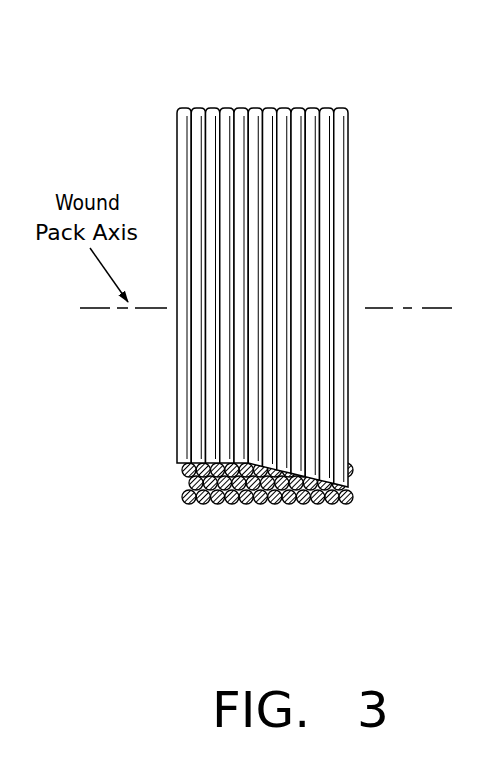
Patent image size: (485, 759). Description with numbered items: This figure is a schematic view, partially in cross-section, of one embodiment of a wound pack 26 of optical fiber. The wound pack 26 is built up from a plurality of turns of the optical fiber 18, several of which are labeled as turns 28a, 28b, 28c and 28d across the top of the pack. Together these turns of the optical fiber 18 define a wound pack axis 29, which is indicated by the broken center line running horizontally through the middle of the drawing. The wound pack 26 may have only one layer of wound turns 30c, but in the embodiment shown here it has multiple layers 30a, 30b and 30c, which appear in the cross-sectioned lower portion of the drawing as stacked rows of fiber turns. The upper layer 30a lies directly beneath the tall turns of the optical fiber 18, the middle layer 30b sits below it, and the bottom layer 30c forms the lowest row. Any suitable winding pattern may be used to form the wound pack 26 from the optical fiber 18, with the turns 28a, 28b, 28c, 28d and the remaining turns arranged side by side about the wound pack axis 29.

The wound pack 26 is at (388, 99).
The turn 28a is at (182, 108).
The turn 28b is at (198, 108).
The turn 28c is at (212, 108).
The turn 28d is at (227, 108).
The wound pack axis 29 is at (388, 307).
The optical fiber 18 is at (177, 398).
The layer 30a is at (184, 473).
The layer 30b is at (190, 483).
The layer of wound turns 30c is at (184, 498).